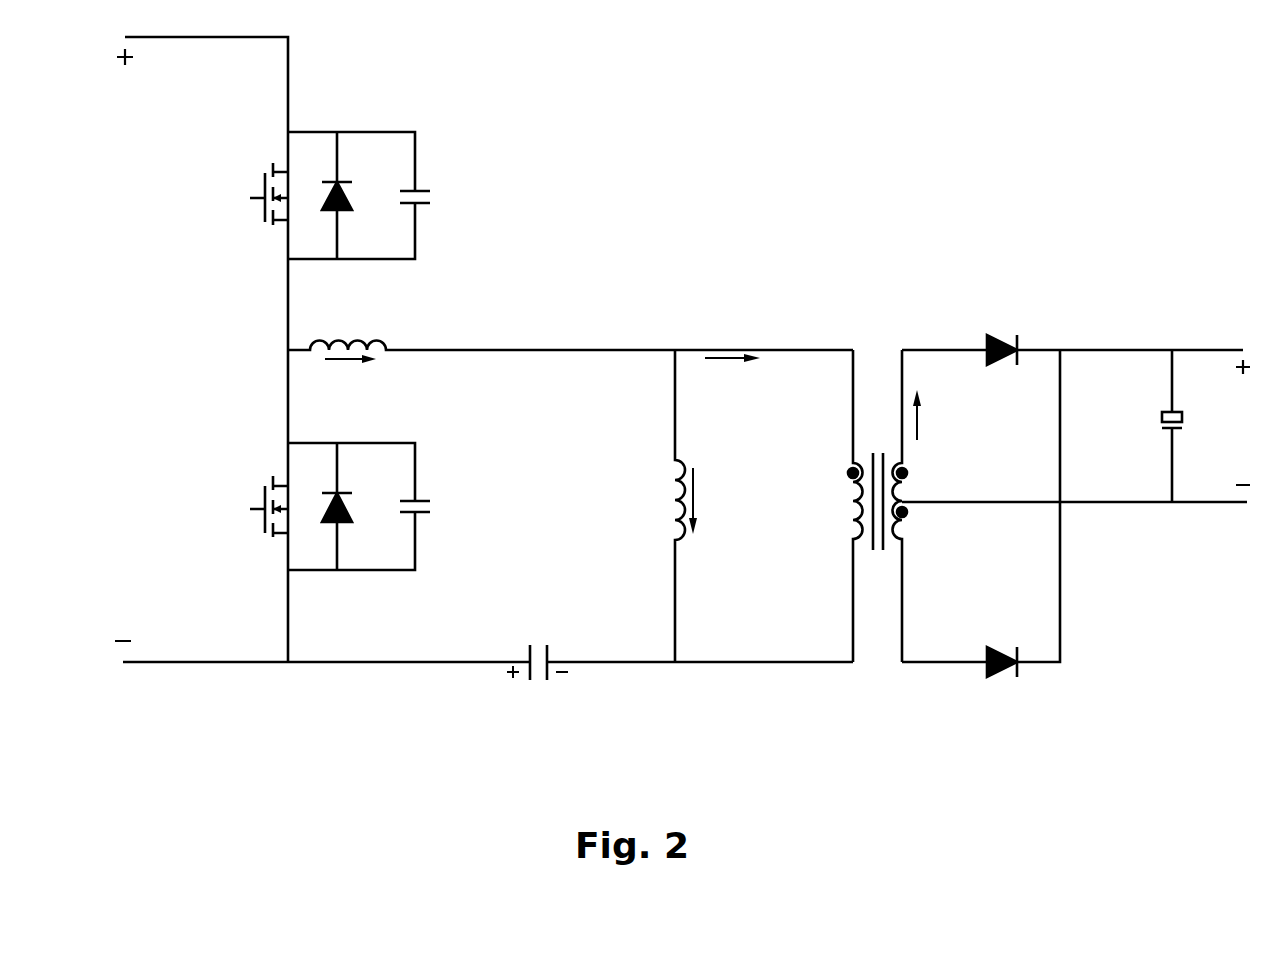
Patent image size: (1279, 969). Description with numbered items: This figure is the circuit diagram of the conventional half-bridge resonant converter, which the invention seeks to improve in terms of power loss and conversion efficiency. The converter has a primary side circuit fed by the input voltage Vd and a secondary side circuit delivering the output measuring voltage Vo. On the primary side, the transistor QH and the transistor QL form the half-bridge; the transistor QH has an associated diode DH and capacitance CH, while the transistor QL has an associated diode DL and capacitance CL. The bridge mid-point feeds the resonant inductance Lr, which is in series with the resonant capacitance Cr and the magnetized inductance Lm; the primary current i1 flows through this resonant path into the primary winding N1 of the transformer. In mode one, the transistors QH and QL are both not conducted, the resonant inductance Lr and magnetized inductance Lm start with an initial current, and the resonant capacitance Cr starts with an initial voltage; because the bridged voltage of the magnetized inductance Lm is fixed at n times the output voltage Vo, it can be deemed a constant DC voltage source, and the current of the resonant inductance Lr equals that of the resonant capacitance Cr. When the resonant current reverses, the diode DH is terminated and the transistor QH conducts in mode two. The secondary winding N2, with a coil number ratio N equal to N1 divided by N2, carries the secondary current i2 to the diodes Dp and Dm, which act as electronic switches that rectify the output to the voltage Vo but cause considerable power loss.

The input voltage Vd is at (315, 349).
The transistor QH is at (252, 194).
The diode DH is at (355, 195).
The high-side snubber capacitor CH is at (433, 198).
The transistor QL is at (252, 506).
The low-side anti-parallel diode DL is at (354, 506).
The low-side snubber capacitor CL is at (432, 511).
The resonant inductance Lr is at (570, 350).
The resonant capacitance Cr is at (676, 662).
The magnetized inductance Lm is at (700, 506).
The primary current i1 is at (735, 383).
The primary winding N1 is at (850, 506).
The secondary winding N2 is at (1070, 506).
The secondary current i2 is at (945, 415).
The diode D+ Dp is at (1072, 329).
The diode D- Dm is at (981, 536).
The output measuring voltage Vo is at (1210, 426).